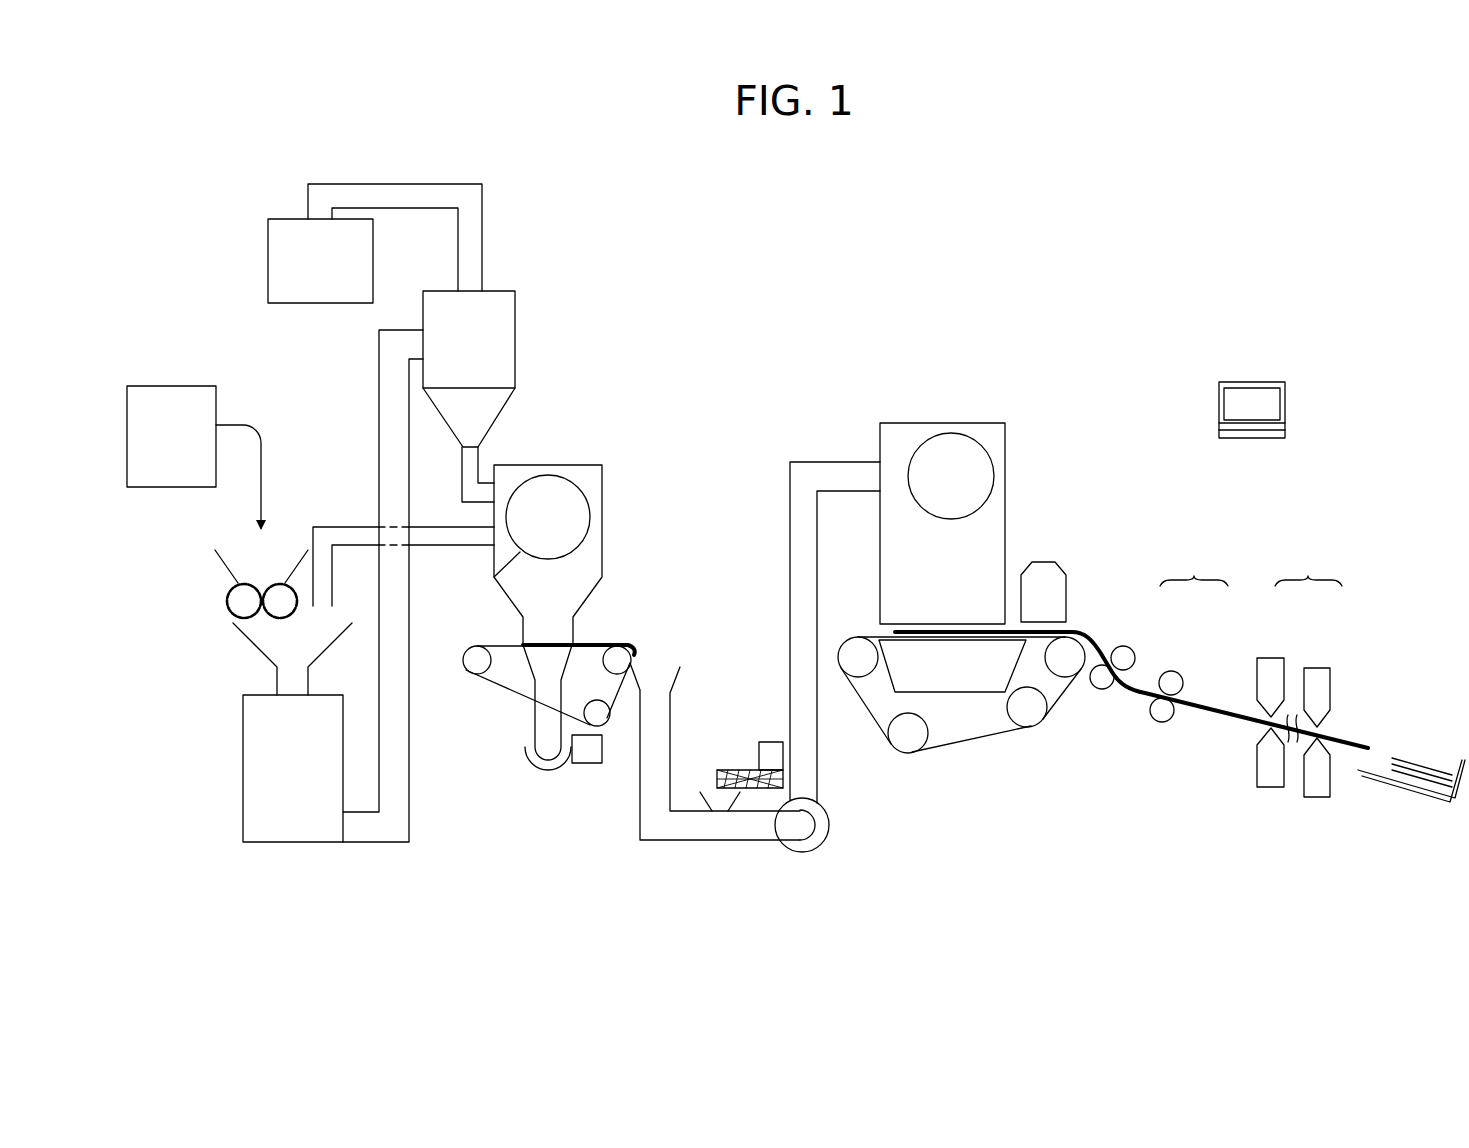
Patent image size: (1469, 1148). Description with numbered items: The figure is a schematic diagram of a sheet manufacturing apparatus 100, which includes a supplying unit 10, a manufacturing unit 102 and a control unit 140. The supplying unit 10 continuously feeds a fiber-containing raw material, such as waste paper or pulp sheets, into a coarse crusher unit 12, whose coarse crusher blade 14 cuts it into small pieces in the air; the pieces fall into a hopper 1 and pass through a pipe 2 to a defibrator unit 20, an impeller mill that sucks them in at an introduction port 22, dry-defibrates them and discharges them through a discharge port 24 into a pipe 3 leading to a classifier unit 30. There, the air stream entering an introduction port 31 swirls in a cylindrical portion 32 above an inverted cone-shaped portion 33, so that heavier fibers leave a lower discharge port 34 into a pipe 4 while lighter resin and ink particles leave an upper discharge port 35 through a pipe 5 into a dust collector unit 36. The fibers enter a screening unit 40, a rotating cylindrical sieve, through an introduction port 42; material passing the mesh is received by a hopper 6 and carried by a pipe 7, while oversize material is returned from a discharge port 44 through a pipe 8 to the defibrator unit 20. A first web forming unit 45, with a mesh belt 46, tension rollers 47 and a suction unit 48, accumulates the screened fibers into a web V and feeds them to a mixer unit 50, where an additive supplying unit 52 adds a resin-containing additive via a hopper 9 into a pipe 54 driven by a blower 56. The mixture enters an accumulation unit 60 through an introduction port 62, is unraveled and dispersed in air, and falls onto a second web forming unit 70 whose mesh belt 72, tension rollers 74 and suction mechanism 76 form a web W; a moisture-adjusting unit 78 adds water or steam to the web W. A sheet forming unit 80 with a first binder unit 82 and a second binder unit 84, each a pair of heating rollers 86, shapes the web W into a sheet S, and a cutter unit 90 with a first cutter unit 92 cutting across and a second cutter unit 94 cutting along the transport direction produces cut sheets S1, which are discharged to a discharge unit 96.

The hopper 1 is at (250, 646).
The pipe 2 is at (288, 680).
The pipe 3 is at (397, 679).
The pipe 4 is at (462, 482).
The pipe 5 is at (411, 190).
The hopper 6 is at (588, 585).
The pipe 7 is at (660, 730).
The pipe 8 is at (438, 548).
The hopper 9 is at (700, 792).
The supplying unit 10 is at (146, 366).
The coarse crusher unit 12 is at (196, 562).
The coarse crusher blade 14 is at (242, 600).
The defibrator unit 20 is at (262, 856).
The introduction port 22 is at (290, 704).
The discharge port 24 is at (343, 823).
The classifier unit 30 is at (500, 362).
The introduction port 31 is at (423, 347).
The cylindrical portion 32 is at (499, 354).
The inverted cone-shaped portion 33 is at (485, 402).
The lower discharge port 34 is at (470, 444).
The upper discharge port 35 is at (466, 292).
The dust collector unit 36 is at (288, 263).
The screening unit 40 is at (569, 582).
The introduction port 42 is at (530, 500).
The discharge port 44 is at (494, 578).
The first web forming unit 45 is at (565, 689).
The mesh belt 46 is at (488, 644).
The tension rollers 47 is at (474, 672).
The suction unit 48 is at (523, 670).
The mixer unit 50 is at (770, 682).
The additive supplying unit 52 is at (770, 746).
The pipe 54 is at (713, 848).
The blower 56 is at (804, 852).
The accumulation unit 60 is at (962, 487).
The introduction port 62 is at (934, 472).
The second web forming unit 70 is at (961, 712).
The mesh belt 72 is at (876, 640).
The tension rollers 74 is at (858, 670).
The suction mechanism 76 is at (955, 690).
The moisture-adjusting unit 78 is at (1042, 572).
The sheet forming unit 80 is at (1159, 636).
The first binder unit 82 is at (1142, 650).
The second binder unit 84 is at (1177, 665).
The heating rollers 86 is at (1102, 680).
The cutter unit 90 is at (1299, 673).
The first cutter unit 92 is at (1274, 650).
The second cutter unit 94 is at (1318, 660).
The discharge unit 96 is at (1405, 790).
The sheet manufacturing apparatus 100 is at (1038, 208).
The manufacturing unit 102 is at (1097, 336).
The control unit 140 is at (1287, 400).
The web V is at (558, 641).
The web W is at (1098, 648).
The sheet S is at (1215, 708).
The cut sheets S1 is at (1415, 765).